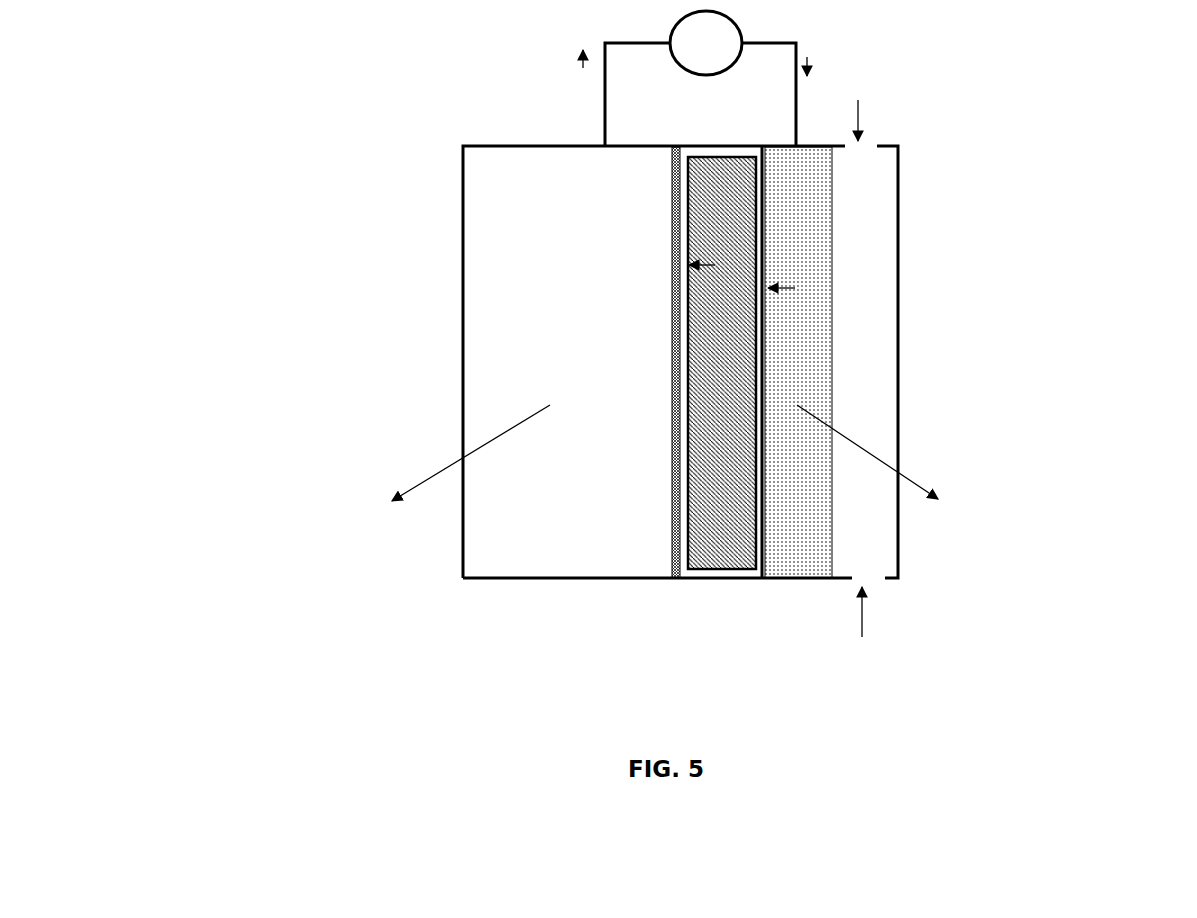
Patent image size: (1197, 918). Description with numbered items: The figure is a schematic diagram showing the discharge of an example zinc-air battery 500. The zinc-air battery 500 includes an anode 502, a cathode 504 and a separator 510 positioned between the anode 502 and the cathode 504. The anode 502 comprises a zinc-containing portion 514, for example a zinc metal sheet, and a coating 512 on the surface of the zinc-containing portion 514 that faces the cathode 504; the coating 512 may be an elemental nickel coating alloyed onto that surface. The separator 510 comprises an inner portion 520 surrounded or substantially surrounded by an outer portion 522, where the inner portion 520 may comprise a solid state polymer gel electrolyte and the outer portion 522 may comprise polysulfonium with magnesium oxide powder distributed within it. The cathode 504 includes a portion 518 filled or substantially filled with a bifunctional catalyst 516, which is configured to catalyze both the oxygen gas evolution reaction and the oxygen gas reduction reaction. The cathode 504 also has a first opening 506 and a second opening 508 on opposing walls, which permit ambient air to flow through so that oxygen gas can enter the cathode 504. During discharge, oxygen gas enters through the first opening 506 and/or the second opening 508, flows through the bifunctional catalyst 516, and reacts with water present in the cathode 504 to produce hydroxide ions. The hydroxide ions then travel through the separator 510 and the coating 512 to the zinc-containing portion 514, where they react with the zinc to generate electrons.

The zinc-air battery 500 is at (355, 156).
The anode 502 is at (461, 297).
The cathode 504 is at (900, 277).
The first opening 506 is at (875, 141).
The second opening 508 is at (888, 587).
The separator 510 is at (720, 145).
The coating 512 is at (672, 148).
The zinc-containing portion 514 is at (528, 550).
The bifunctional catalyst 516 is at (816, 158).
The portion 518 is at (832, 333).
The inner portion 520 is at (733, 552).
The outer portion 522 is at (693, 571).